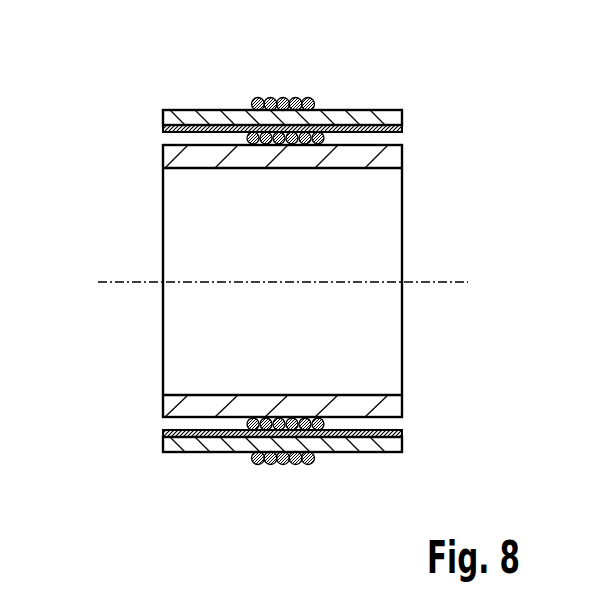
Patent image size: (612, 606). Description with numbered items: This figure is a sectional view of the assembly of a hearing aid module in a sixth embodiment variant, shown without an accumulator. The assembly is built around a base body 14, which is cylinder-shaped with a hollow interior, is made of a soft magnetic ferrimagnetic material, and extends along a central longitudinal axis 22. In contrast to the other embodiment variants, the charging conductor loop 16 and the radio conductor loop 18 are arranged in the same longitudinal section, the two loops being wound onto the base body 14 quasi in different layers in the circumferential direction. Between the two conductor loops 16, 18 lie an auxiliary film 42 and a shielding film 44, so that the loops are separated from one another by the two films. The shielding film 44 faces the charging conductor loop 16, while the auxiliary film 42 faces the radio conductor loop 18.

The base body 14 is at (394, 156).
The charging conductor loop 16 is at (230, 138).
The radio conductor loop 18 is at (284, 84).
The central longitudinal axis 22 is at (433, 283).
The auxiliary film 42 is at (190, 118).
The shielding film 44 is at (403, 128).